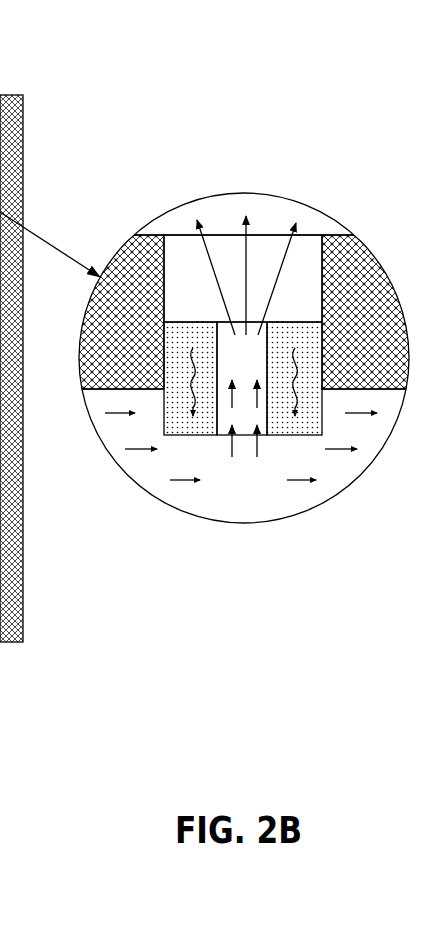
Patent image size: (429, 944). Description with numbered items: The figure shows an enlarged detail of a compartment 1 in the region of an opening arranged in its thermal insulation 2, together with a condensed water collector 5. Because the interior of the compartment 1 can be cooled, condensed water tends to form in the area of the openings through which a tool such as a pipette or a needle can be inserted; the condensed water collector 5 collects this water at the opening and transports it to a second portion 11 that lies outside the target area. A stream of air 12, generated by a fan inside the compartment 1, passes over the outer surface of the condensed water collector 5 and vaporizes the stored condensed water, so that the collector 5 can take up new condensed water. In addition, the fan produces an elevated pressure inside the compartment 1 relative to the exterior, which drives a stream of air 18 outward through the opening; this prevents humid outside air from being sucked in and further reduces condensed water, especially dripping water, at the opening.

The compartment 1 is at (132, 121).
The thermal insulation 2 is at (0, 538).
The condensed water collector 5 is at (290, 430).
The second portion 11 is at (192, 447).
The stream of air 12 is at (133, 460).
The stream of air 18 is at (275, 212).